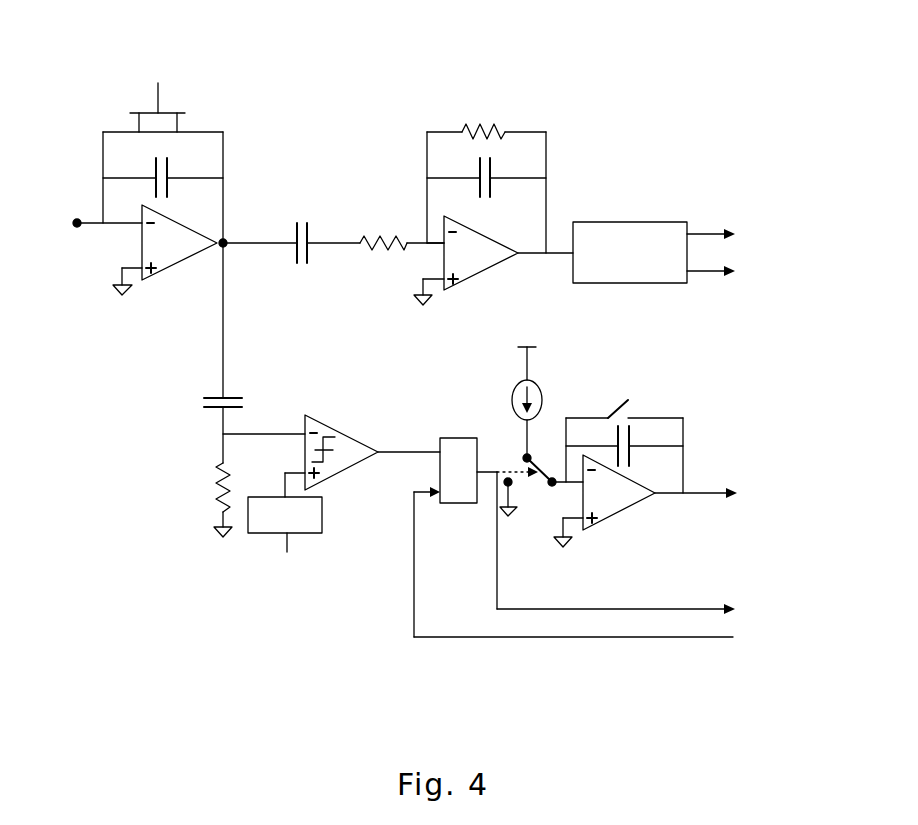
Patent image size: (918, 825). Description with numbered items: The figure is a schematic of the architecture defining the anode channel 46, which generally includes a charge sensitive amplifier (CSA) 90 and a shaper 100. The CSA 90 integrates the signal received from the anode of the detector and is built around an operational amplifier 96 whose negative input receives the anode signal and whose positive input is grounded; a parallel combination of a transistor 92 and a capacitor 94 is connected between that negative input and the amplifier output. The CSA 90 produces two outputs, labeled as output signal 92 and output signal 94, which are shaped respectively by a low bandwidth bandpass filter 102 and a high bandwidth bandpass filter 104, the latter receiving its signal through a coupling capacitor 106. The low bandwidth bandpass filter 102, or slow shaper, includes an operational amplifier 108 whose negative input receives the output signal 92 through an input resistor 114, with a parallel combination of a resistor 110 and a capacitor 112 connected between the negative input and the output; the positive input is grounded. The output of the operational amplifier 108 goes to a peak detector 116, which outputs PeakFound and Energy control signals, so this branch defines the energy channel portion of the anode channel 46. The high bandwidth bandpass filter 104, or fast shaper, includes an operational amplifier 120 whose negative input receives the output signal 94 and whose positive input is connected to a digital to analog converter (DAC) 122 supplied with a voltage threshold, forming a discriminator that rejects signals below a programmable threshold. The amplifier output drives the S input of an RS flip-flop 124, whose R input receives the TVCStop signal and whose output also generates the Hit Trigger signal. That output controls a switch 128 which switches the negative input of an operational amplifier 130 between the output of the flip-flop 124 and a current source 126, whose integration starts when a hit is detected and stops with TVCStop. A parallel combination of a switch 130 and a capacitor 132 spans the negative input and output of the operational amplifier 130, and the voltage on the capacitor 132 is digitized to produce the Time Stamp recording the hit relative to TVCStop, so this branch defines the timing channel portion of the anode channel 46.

The anode channel 46 is at (148, 620).
The charge sensitive amplifier (CSA) 90 is at (219, 72).
The transistor 92 is at (185, 113).
The capacitor 94 is at (167, 167).
The operational amplifier 96 is at (180, 265).
The shaper 100 is at (742, 118).
The low bandwidth bandpass filter 102 is at (462, 318).
The high bandwidth bandpass filter 104 is at (307, 227).
The capacitor 106 is at (217, 397).
The operational amplifier 108 is at (482, 278).
The resistor 110 is at (503, 118).
The capacitor 112 is at (493, 167).
The resistor 114 is at (387, 232).
The peak detector 116 is at (630, 290).
The operational amplifier 120 is at (350, 433).
The digital to analog converter (DAC) 122 is at (322, 515).
The flip-flop 124 is at (450, 437).
The current source 126 is at (543, 393).
The switch 128 is at (532, 500).
The operational amplifier 130 is at (630, 402).
The capacitor 132 is at (630, 430).